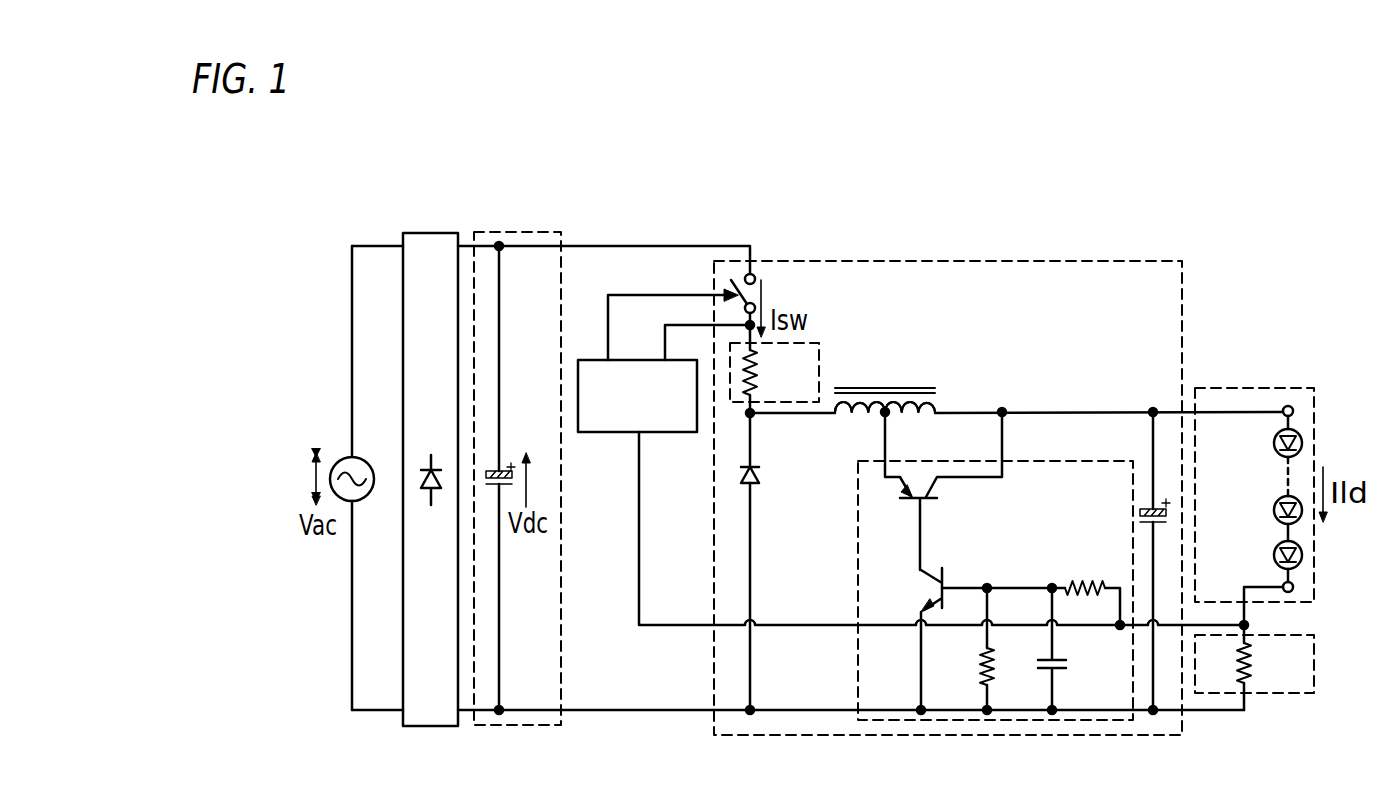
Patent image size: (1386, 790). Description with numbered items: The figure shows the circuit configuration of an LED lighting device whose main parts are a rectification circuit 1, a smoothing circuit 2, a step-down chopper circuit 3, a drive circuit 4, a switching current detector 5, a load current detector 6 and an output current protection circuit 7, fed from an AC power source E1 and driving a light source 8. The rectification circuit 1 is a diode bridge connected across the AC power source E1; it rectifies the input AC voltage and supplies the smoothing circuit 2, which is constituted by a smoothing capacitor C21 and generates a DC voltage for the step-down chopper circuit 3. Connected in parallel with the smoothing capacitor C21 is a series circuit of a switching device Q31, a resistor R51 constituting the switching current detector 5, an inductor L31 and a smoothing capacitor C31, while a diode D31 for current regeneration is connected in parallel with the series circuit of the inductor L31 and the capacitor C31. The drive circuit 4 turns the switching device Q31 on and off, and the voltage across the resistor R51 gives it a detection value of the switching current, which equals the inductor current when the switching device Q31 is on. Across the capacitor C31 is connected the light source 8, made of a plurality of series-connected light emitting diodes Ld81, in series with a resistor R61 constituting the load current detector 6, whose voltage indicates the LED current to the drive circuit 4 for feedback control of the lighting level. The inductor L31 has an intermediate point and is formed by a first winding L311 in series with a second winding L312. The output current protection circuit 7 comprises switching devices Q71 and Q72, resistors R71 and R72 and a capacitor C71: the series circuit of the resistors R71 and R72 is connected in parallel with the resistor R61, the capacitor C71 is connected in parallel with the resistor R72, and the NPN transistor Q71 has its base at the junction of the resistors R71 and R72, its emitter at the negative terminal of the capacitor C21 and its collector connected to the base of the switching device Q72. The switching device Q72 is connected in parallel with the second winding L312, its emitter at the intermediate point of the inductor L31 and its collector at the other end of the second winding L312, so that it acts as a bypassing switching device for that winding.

The rectification circuit 1 is at (433, 232).
The smoothing circuit 2 is at (514, 232).
The step-down chopper circuit 3 is at (912, 261).
The drive circuit 4 is at (667, 432).
The switching current detector 5 is at (819, 343).
The load current detector 6 is at (1314, 660).
The output current protection circuit 7 is at (858, 545).
The light source 8 is at (1253, 388).
The AC power source E1 is at (360, 461).
The smoothing capacitor C21 is at (517, 450).
The switching device Q31 is at (771, 289).
The resistor R51 is at (776, 372).
The diode D31 is at (778, 477).
The inductor L31 is at (885, 384).
The first winding L311 is at (851, 428).
The second winding L312 is at (920, 428).
The switching device Q72 is at (941, 489).
The switching device Q71 is at (967, 641).
The resistor R71 is at (1091, 586).
The resistor R72 is at (961, 651).
The capacitor C71 is at (1077, 651).
The capacitor C31 is at (1136, 563).
The light emitting diode Ld81 is at (1253, 515).
The resistor R61 is at (1270, 667).